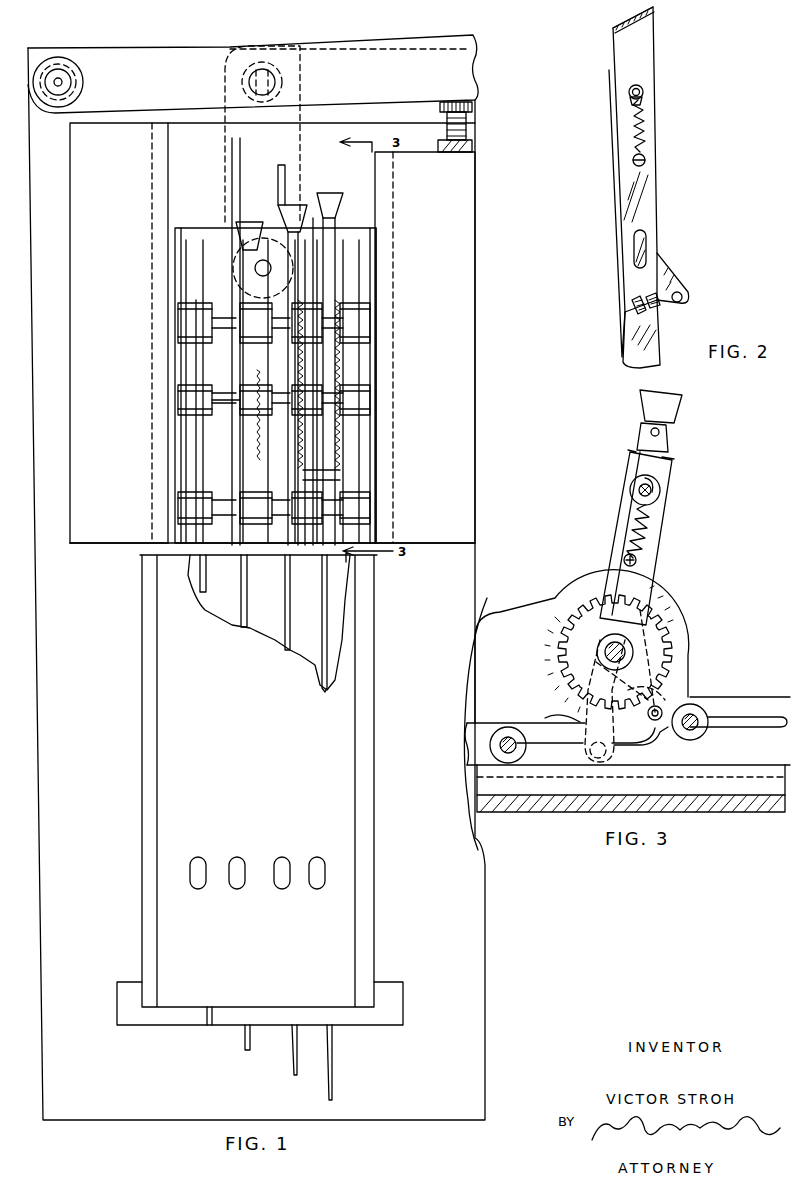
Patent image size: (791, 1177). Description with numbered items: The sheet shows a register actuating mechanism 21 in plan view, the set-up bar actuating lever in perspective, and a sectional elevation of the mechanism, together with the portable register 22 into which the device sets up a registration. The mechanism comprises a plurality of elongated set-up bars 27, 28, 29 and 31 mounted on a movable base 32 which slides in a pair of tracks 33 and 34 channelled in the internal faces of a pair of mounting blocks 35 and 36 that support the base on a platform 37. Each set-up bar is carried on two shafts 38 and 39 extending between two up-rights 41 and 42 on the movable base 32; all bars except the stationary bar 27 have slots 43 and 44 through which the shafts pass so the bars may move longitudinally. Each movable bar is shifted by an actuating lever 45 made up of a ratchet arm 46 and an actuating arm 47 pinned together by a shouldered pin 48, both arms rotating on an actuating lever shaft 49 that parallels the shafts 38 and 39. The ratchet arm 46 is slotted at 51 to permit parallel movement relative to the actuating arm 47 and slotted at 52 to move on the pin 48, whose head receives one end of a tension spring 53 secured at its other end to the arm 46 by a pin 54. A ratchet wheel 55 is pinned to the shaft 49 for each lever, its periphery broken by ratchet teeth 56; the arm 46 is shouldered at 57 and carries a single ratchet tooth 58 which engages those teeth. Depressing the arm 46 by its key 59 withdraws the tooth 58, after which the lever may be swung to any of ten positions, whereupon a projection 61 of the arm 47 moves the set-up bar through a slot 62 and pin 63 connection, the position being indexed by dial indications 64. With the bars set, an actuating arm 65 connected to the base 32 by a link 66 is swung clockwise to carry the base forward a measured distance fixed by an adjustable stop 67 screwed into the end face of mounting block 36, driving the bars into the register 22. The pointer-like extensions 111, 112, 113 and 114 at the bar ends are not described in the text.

In FIG. 1, the register actuating mechanism 21 is at (500, 272).
In FIG. 1, the portable register 22 is at (372, 805).
In FIG. 1, the set-up bar 27 is at (205, 552).
In FIG. 1, the set-up bar 28 is at (250, 552).
In FIG. 1, the set-up bar 29 is at (292, 552).
In FIG. 1, the set-up bar 31 is at (340, 552).
In FIG. 3, the set-up bar 31 is at (582, 646).
In FIG. 1, the movable base 32 is at (190, 245).
In FIG. 3, the movable base 32 is at (568, 812).
In FIG. 1, the track 33 is at (155, 203).
In FIG. 1, the track 34 is at (390, 185).
In FIG. 1, the mounting block 35 is at (90, 237).
In FIG. 1, the mounting block 36 is at (470, 210).
In FIG. 1, the platform 37 is at (62, 405).
In FIG. 3, the platform 37 is at (738, 808).
In FIG. 1, the shaft 38 is at (210, 490).
In FIG. 3, the shaft 38 is at (510, 760).
In FIG. 1, the shaft 39 is at (210, 300).
In FIG. 3, the shaft 39 is at (710, 715).
In FIG. 1, the up-right 41 is at (160, 537).
In FIG. 1, the up-right 42 is at (378, 540).
In FIG. 3, the slot 43 is at (556, 752).
In FIG. 3, the slot 44 is at (720, 730).
In FIG. 1, the actuating lever 45 is at (335, 248).
In FIG. 2, the actuating lever 45 is at (660, 174).
In FIG. 3, the actuating lever 45 is at (616, 497).
In FIG. 2, the ratchet arm 46 is at (656, 210).
In FIG. 3, the ratchet arm 46 is at (622, 518).
In FIG. 1, the actuating arm 47 is at (320, 260).
In FIG. 2, the actuating arm 47 is at (610, 178).
In FIG. 1, the shouldered pin 48 is at (335, 238).
In FIG. 2, the shouldered pin 48 is at (645, 90).
In FIG. 3, the shouldered pin 48 is at (638, 485).
In FIG. 1, the actuating lever shaft 49 is at (212, 410).
In FIG. 3, the actuating lever shaft 49 is at (632, 650).
In FIG. 2, the slot 51 is at (648, 248).
In FIG. 3, the slot 51 is at (568, 625).
In FIG. 2, the slot 52 is at (630, 108).
In FIG. 3, the slot 52 is at (655, 482).
In FIG. 1, the tension spring 53 is at (340, 320).
In FIG. 2, the tension spring 53 is at (648, 112).
In FIG. 3, the tension spring 53 is at (648, 520).
In FIG. 1, the pin 54 is at (345, 352).
In FIG. 2, the pin 54 is at (645, 160).
In FIG. 3, the pin 54 is at (638, 560).
In FIG. 1, the ratchet wheel 55 is at (345, 440).
In FIG. 3, the ratchet wheel 55 is at (590, 605).
In FIG. 3, the ratchet teeth 56 is at (668, 648).
In FIG. 1, the shoulder 57 is at (345, 464).
In FIG. 2, the shoulder 57 is at (635, 312).
In FIG. 3, the shoulder 57 is at (554, 711).
In FIG. 2, the ratchet tooth 58 is at (630, 302).
In FIG. 3, the ratchet tooth 58 is at (635, 736).
In FIG. 1, the key 59 is at (305, 200).
In FIG. 3, the key 59 is at (668, 412).
In FIG. 2, the projection 61 is at (678, 270).
In FIG. 3, the projection 61 is at (620, 686).
In FIG. 3, the slot 62 is at (662, 710).
In FIG. 3, the pin 63 is at (665, 692).
In FIG. 3, the indications 64 is at (668, 598).
In FIG. 1, the actuating arm 65 is at (345, 48).
In FIG. 1, the link 66 is at (305, 118).
In FIG. 1, the adjustable stop 67 is at (478, 110).
In FIG. 1, the pointer 111 is at (335, 675).
In FIG. 1, the pointer 112 is at (290, 640).
In FIG. 1, the pointer 113 is at (247, 618).
In FIG. 1, the pointer 114 is at (206, 588).